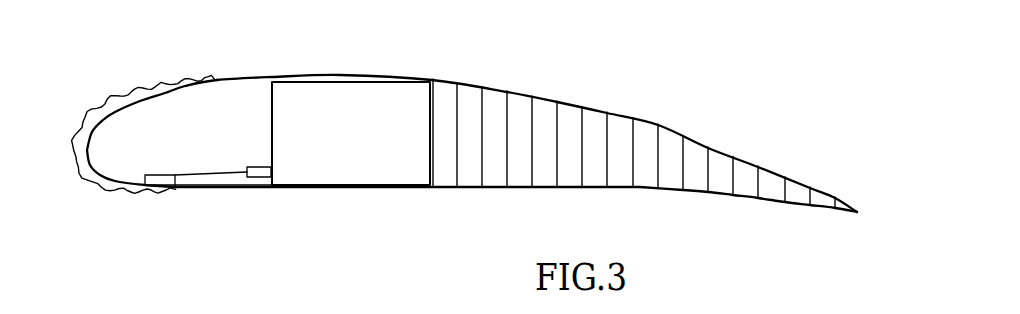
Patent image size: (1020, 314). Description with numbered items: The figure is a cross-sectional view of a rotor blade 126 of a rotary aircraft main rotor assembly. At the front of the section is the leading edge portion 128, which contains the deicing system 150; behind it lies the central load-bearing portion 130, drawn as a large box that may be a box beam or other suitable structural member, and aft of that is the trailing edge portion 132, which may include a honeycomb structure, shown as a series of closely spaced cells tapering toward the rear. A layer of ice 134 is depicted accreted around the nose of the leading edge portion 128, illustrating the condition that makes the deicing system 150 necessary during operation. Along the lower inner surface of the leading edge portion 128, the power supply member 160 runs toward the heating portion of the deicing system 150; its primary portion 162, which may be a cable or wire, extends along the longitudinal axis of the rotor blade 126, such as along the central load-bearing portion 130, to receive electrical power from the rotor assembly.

The rotor blade 126 is at (563, 35).
The leading edge portion 128 is at (190, 187).
The central load-bearing portion 130 is at (320, 188).
The trailing edge portion 132 is at (567, 173).
The layer of ice 134 is at (132, 95).
The deicing system 150 is at (160, 142).
The power supply member 160 is at (248, 157).
The primary portion 162 is at (258, 185).